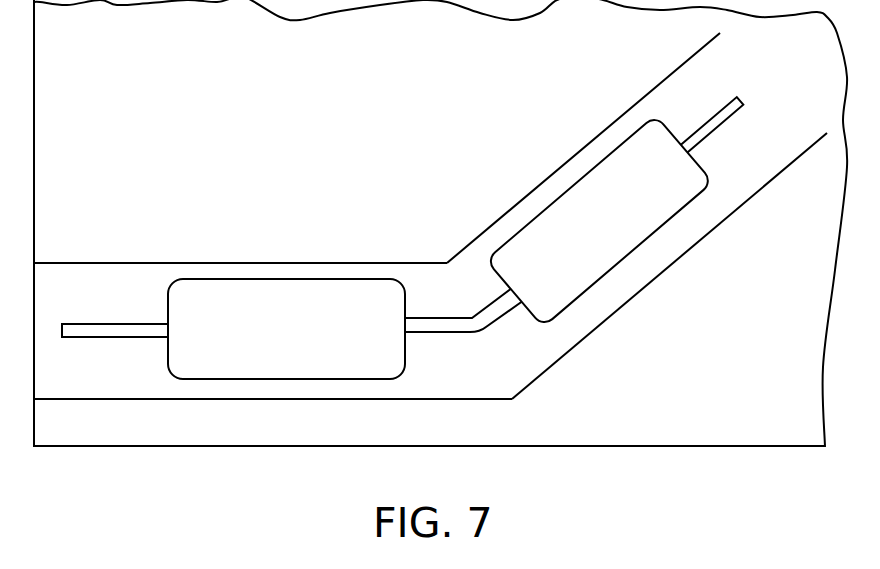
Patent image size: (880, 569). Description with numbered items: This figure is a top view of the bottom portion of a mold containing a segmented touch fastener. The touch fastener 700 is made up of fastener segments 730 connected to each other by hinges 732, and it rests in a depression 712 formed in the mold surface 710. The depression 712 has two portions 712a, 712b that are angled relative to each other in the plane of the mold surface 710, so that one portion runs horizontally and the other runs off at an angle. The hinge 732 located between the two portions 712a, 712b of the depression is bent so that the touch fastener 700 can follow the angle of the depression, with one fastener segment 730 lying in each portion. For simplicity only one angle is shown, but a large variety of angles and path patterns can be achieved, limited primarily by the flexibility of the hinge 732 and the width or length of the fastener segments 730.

The touch fastener 700 is at (357, 300).
The mold surface 710 is at (630, 456).
The depression 712 is at (117, 383).
The first portion of depression 712a is at (305, 400).
The second portion of depression 712b is at (673, 263).
The fastener segment 730 is at (146, 300).
The hinge 732 is at (112, 326).